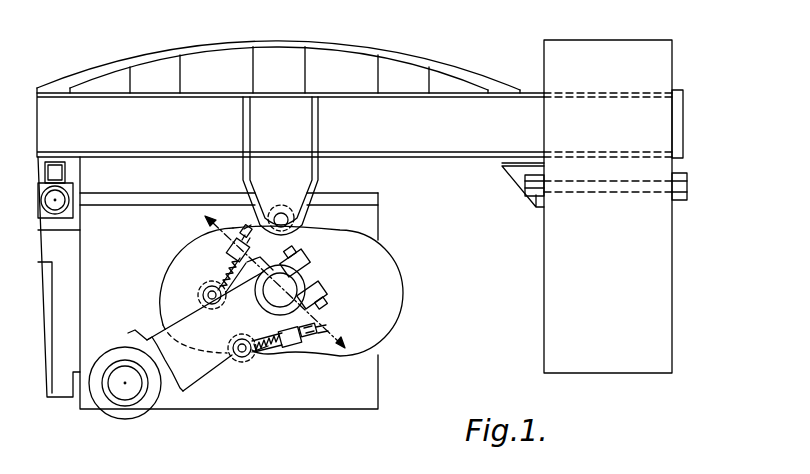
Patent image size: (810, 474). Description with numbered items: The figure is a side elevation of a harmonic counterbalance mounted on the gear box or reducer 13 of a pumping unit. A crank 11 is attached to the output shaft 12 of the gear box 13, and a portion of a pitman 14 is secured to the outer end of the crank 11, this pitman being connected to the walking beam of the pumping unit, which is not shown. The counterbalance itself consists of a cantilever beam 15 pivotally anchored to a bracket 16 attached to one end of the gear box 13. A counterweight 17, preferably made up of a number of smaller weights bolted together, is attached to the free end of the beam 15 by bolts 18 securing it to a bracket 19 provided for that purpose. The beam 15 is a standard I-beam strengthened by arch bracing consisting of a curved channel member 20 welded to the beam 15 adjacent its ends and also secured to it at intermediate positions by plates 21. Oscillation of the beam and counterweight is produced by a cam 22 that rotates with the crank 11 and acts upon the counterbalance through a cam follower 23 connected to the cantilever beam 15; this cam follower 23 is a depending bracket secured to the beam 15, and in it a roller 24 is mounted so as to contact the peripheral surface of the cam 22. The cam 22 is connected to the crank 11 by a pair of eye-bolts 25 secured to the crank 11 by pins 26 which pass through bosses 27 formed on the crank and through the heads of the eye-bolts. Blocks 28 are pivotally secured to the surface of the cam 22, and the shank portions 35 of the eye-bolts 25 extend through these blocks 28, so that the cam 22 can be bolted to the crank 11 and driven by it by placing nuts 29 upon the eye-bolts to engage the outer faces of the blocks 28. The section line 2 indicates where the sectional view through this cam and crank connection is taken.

The section line 2- 2 is at (355, 338).
The crank 11 is at (198, 367).
The output shaft 12 is at (268, 298).
The gear box 13 is at (365, 376).
The pitman 14 is at (180, 389).
The cantilever beam 15 is at (420, 158).
The bracket 16 is at (48, 247).
The counterweight 17 is at (660, 296).
The bolts 18 is at (688, 186).
The bracket 19 is at (520, 176).
The curved channel member 20 is at (202, 48).
The plates 21 is at (253, 78).
The cam 22 is at (400, 282).
The cam follower 23 is at (318, 173).
The roller 24 is at (297, 222).
The eye-bolts 25 is at (224, 272).
The pins 26 is at (203, 296).
The bosses 27 is at (200, 302).
The blocks 28 is at (229, 248).
The nuts 29 is at (250, 240).
The shank portions 35 is at (265, 350).